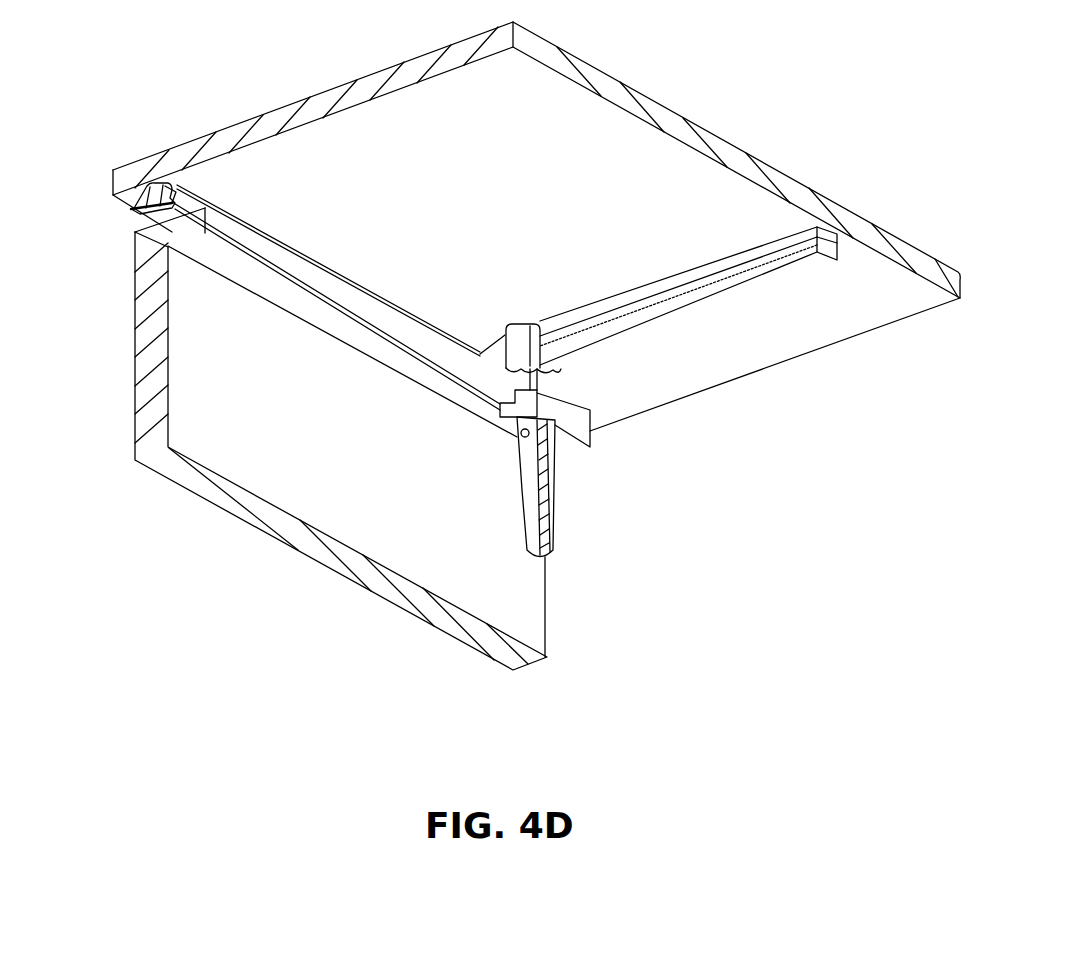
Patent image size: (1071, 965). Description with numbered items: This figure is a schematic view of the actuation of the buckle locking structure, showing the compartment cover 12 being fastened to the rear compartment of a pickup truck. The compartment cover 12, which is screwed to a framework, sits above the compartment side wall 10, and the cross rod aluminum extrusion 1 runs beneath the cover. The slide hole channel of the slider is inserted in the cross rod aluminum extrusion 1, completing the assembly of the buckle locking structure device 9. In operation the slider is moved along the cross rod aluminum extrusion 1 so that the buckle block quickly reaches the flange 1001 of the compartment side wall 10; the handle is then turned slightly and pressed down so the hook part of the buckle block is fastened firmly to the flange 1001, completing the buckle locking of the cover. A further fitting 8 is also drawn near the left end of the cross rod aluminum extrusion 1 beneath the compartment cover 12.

The compartment cover 12 is at (748, 167).
The compartment side wall 10 is at (253, 513).
The cross rod aluminum extrusion 1 is at (740, 283).
The hinge bracket 8 is at (186, 213).
The flange 1001 is at (590, 447).
The buckle locking structure device 9 is at (517, 483).